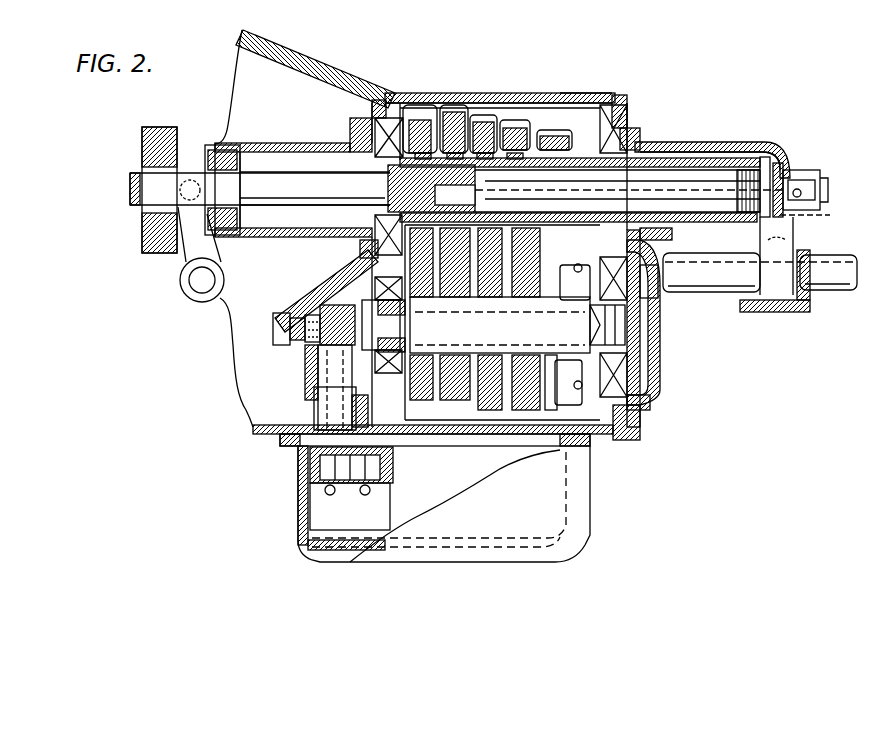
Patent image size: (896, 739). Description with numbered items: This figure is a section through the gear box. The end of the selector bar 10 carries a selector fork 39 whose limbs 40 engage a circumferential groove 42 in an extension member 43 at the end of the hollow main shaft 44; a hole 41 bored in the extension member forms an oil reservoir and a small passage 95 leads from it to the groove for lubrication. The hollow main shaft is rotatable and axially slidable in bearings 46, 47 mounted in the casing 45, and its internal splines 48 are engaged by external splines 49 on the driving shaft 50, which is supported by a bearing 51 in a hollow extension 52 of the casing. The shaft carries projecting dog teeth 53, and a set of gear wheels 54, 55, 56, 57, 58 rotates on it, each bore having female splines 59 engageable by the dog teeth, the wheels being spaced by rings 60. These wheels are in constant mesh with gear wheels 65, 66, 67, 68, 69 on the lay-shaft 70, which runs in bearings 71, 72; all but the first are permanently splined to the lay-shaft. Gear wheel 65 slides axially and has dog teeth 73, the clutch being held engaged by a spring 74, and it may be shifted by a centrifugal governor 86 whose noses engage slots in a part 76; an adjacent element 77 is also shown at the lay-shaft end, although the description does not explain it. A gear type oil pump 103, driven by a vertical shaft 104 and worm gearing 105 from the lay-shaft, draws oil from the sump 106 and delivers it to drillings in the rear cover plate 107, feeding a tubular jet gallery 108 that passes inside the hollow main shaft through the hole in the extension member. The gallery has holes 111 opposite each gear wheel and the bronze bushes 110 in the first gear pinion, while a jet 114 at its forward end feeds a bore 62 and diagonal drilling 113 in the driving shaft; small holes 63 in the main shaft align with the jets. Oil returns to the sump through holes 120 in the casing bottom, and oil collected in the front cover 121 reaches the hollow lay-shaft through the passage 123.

The selector bar 10 is at (716, 275).
The selector fork 39 is at (812, 254).
The limbs 40 is at (818, 180).
The hole 41 is at (770, 275).
The circumferential groove 42 is at (800, 215).
The extension member 43 is at (790, 172).
The hollow main shaft 44 is at (653, 183).
The casing 45 is at (620, 104).
The bearing 46 is at (634, 150).
The bearing 47 is at (376, 150).
The internal splines 48 is at (529, 160).
The external splines 49 is at (422, 160).
The driving shaft 50 is at (279, 172).
The bearing 51 is at (225, 150).
The hollow extension 52 is at (262, 143).
The dog teeth 53 is at (557, 130).
The gear wheel 54 is at (586, 125).
The gear wheel 55 is at (513, 118).
The gear wheel 56 is at (488, 115).
The gear wheel 57 is at (450, 116).
The gear wheel 58 is at (424, 118).
The female splines 59 is at (446, 150).
The rings 60 is at (502, 322).
The bore 62 is at (340, 272).
The small holes 63 is at (514, 173).
The gear wheel 65 is at (540, 398).
The gear wheel 66 is at (515, 402).
The gear wheel 67 is at (514, 408).
The gear wheel 68 is at (455, 347).
The gear wheel 69 is at (433, 347).
The lay-shaft 70 is at (425, 347).
The bearing 71 is at (590, 380).
The bearing 72 is at (386, 300).
The dog teeth 73 is at (526, 293).
The spring 74 is at (648, 366).
The part 76 is at (650, 312).
The shaft end 77 is at (521, 365).
The centrifugal governor 86 is at (648, 294).
The small passage 95 is at (778, 158).
The gear type oil pump 103 is at (318, 468).
The vertical shaft 104 is at (318, 402).
The worm gearing 105 is at (287, 340).
The sump 106 is at (298, 503).
The rear cover plate 107 is at (753, 148).
The tubular jet gallery 108 is at (710, 151).
The bronze bushes 110 is at (604, 100).
The holes 111 is at (666, 222).
The diagonal drilling 113 is at (360, 248).
The jet 114 is at (487, 118).
The holes 120 is at (377, 132).
The front cover 121 is at (292, 284).
The passage 123 is at (292, 312).